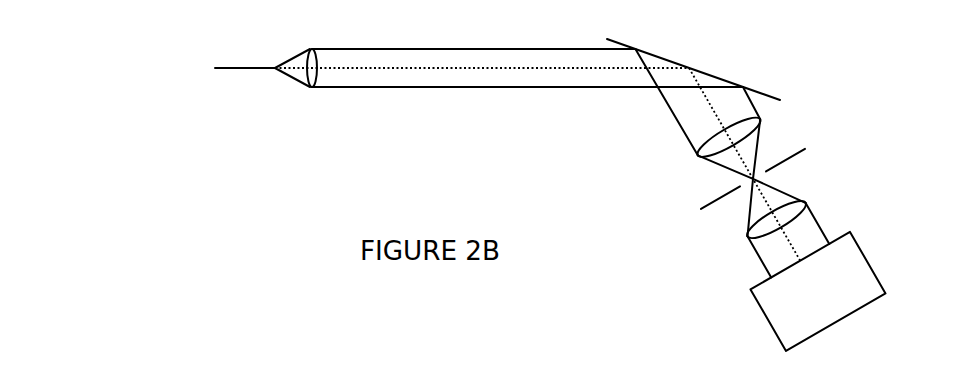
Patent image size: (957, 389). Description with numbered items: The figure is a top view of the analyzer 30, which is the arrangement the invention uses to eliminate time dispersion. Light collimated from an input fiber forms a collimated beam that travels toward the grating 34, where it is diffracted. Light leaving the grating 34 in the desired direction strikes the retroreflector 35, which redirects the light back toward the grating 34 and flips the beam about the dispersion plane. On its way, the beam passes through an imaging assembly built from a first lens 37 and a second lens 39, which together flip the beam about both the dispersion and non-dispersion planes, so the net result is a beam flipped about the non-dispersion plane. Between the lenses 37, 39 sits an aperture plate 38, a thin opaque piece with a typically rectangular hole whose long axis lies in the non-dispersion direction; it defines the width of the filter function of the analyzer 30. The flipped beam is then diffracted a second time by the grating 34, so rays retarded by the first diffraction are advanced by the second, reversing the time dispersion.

The analyzer 30 is at (158, 82).
The grating 34 is at (779, 97).
The retroreflector 35 is at (880, 299).
The lens 37 is at (698, 155).
The aperture plate 38 is at (708, 209).
The lens 39 is at (760, 233).